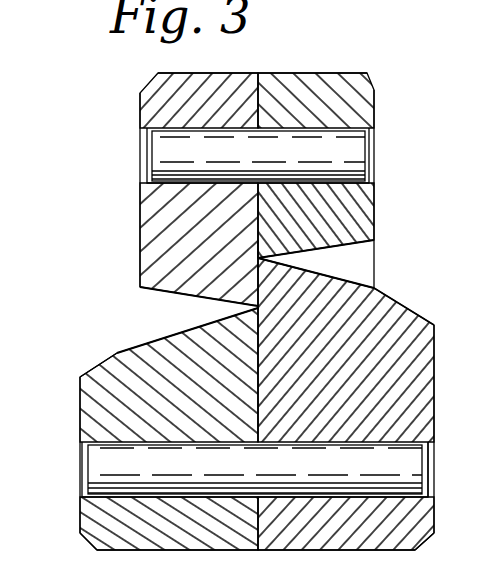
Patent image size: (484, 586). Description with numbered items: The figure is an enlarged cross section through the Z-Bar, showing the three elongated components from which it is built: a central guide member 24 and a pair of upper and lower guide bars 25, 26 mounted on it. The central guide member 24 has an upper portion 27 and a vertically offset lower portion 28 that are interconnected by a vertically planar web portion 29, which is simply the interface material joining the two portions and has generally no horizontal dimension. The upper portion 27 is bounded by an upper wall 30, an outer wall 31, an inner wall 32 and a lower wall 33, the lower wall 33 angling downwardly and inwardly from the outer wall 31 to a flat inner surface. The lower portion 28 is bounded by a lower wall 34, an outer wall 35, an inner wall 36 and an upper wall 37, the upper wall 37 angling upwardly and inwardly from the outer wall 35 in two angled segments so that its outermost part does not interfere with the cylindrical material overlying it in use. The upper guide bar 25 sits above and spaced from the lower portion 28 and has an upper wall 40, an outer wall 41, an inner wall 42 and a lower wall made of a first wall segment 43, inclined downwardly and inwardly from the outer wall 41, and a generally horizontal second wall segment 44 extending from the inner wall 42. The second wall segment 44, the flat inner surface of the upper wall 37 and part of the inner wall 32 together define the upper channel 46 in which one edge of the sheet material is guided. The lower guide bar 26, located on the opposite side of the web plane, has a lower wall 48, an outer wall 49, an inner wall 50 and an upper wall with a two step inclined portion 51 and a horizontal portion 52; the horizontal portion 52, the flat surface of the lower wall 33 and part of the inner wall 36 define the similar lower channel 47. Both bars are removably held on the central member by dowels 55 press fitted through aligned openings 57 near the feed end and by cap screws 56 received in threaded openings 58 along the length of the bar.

The central guide member 24 is at (247, 172).
The upper guide bar 25 is at (368, 107).
The lower guide bar 26 is at (250, 421).
The upper portion 27 is at (150, 106).
The lower portion 28 is at (431, 334).
The web portion 29 is at (258, 286).
The upper wall 30 is at (238, 72).
The outer wall 31 is at (140, 213).
The inner wall 32 is at (260, 90).
The lower wall 33 is at (142, 297).
The lower wall 34 is at (378, 551).
The outer wall 35 is at (436, 391).
The inner wall 36 is at (240, 551).
The upper wall 37 is at (424, 305).
The upper wall 40 is at (340, 72).
The outer wall 41 is at (373, 186).
The inner wall 42 is at (258, 214).
The first wall segment 43 is at (362, 242).
The second wall segment 44 is at (266, 256).
The upper channel 46 is at (258, 258).
The lower channel 47 is at (256, 308).
The lower wall 48 is at (142, 551).
The outer wall 49 is at (80, 519).
The inner wall 50 is at (262, 378).
The two step inclined portion 51 is at (146, 339).
The horizontal portion 52 is at (250, 316).
The dowels 55 is at (173, 164).
The cap screws 56 is at (459, 419).
The aligned openings 57 is at (173, 130).
The threaded openings 58 is at (456, 471).